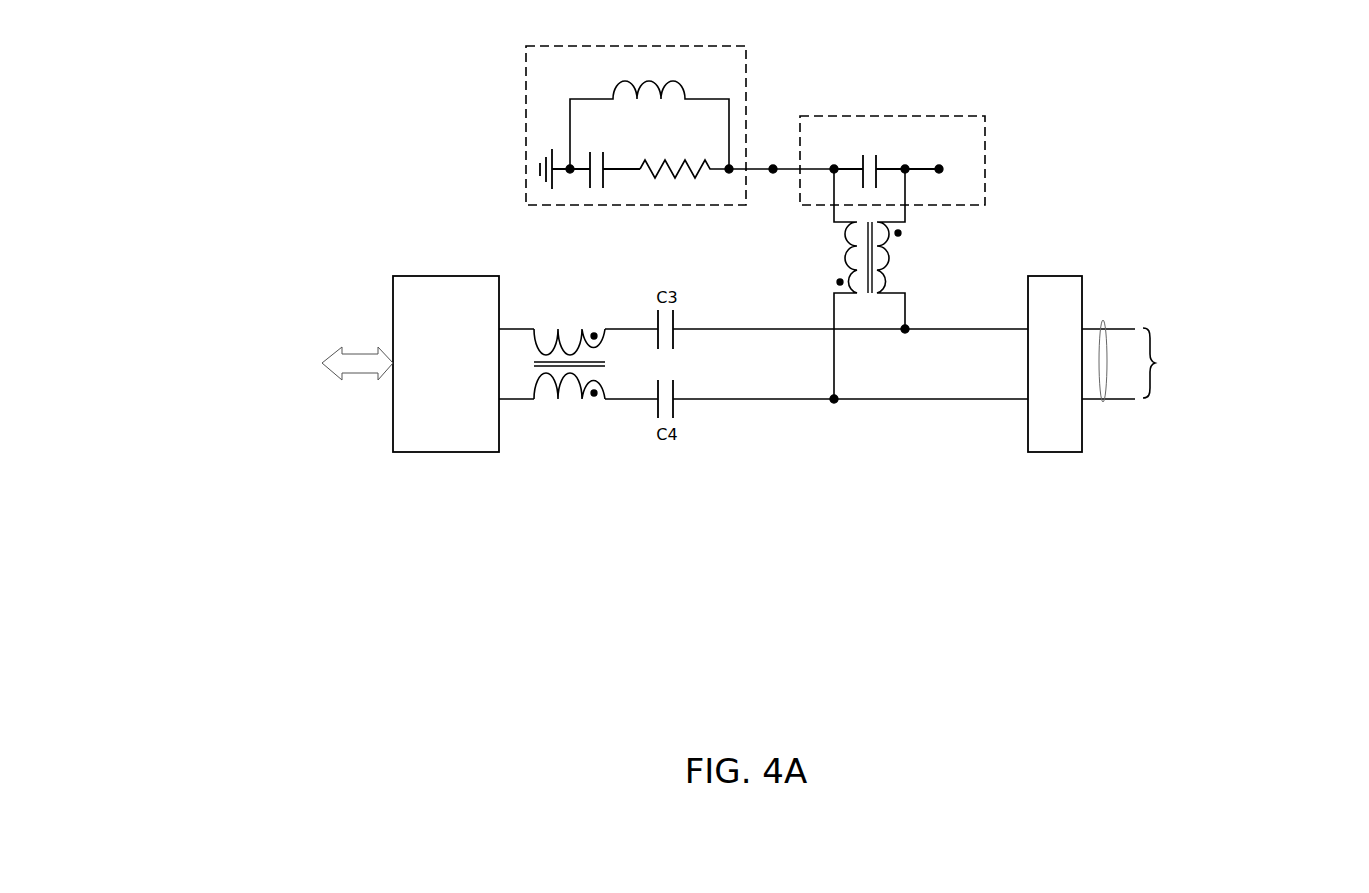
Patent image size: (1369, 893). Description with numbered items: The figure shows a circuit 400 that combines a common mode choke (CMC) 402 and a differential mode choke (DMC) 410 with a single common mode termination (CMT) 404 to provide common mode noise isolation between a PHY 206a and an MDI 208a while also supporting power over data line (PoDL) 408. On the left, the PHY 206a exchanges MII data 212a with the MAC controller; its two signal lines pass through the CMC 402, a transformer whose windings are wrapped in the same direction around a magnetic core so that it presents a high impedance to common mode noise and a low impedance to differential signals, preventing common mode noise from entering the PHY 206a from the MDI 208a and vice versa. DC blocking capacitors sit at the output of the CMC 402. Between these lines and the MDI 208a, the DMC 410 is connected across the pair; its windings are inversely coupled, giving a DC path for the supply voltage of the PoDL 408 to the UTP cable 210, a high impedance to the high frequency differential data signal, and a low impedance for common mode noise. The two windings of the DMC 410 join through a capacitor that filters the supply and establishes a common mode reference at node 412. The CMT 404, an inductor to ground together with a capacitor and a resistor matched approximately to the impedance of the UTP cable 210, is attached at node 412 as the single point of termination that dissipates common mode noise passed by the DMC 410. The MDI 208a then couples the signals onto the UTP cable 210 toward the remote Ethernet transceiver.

The circuit 400 is at (1036, 671).
The common mode choke (CMC) 402 is at (570, 329).
The common mode termination (CMT) 404 is at (526, 78).
The power over data line (PoDL) 408 is at (985, 133).
The differential mode choke (DMC) 410 is at (870, 302).
The node 412 is at (775, 165).
The physical layer device (PHY) 206a is at (443, 276).
The medium dependent interface (MDI) 208a is at (1052, 276).
The UTP cable 210 is at (1103, 403).
The MII data 212a is at (358, 380).